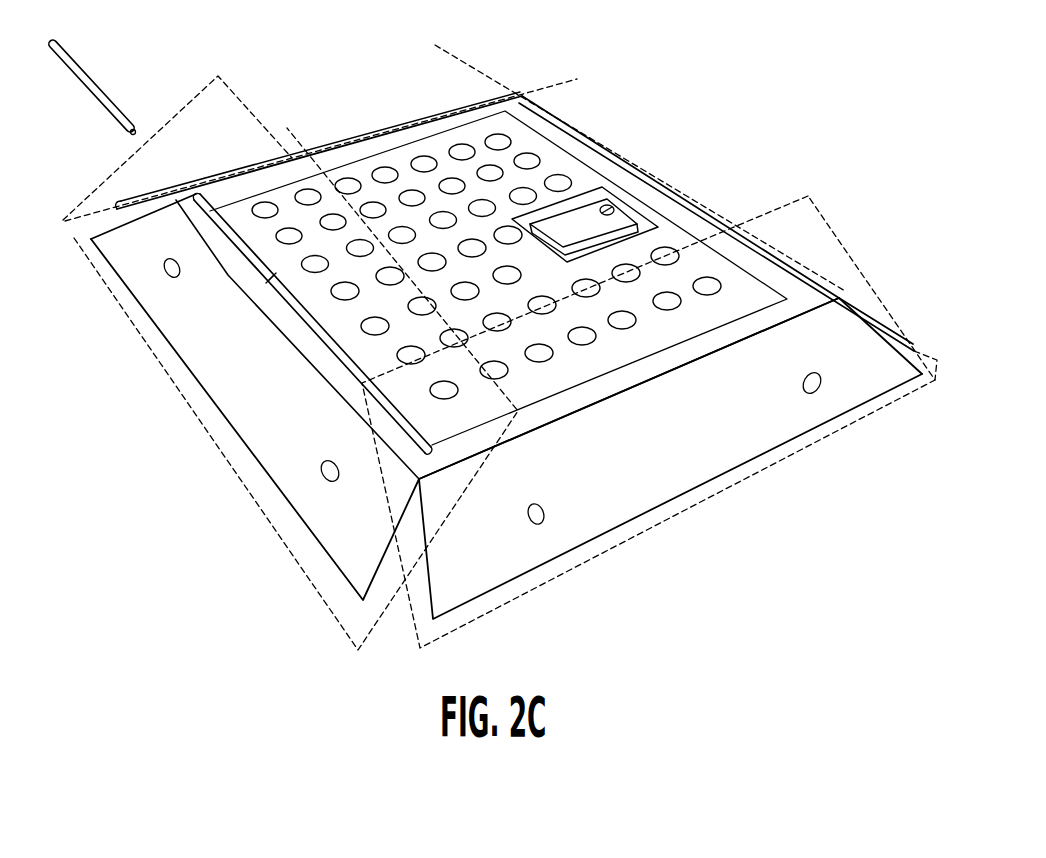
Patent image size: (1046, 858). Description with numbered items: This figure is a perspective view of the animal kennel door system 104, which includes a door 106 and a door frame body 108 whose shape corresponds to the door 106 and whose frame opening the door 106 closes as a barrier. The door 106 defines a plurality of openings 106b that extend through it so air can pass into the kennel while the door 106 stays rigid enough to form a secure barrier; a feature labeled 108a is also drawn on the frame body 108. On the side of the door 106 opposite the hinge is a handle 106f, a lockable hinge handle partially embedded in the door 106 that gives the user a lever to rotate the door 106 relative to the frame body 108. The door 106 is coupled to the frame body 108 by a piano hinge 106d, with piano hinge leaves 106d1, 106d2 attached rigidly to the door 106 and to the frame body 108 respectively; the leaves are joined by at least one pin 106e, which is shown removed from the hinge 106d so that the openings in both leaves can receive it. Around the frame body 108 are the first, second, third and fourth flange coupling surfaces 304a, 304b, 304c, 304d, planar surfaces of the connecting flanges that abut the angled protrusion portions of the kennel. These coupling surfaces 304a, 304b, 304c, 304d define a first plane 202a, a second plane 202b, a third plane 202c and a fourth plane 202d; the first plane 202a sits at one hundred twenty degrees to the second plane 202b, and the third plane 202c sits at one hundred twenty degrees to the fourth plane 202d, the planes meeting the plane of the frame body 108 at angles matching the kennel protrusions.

The animal kennel door system 104 is at (704, 104).
The door 106 is at (290, 174).
The openings 106b is at (375, 162).
The piano hinge 106d is at (177, 190).
The piano hinge leaf 106d1 is at (330, 340).
The piano hinge leaf 106d2 is at (170, 194).
The pin 106e is at (89, 70).
The handle 106f is at (582, 205).
The door frame body 108 is at (724, 434).
The base aperture 108a is at (536, 510).
The first plane 202a is at (310, 142).
The second plane 202b is at (843, 249).
The third plane 202c is at (293, 562).
The fourth plane 202d is at (712, 196).
The first flange coupling surface 304a is at (420, 112).
The second flange coupling surface 304b is at (669, 468).
The third flange coupling surface 304c is at (290, 460).
The fourth flange coupling surface 304d is at (840, 286).